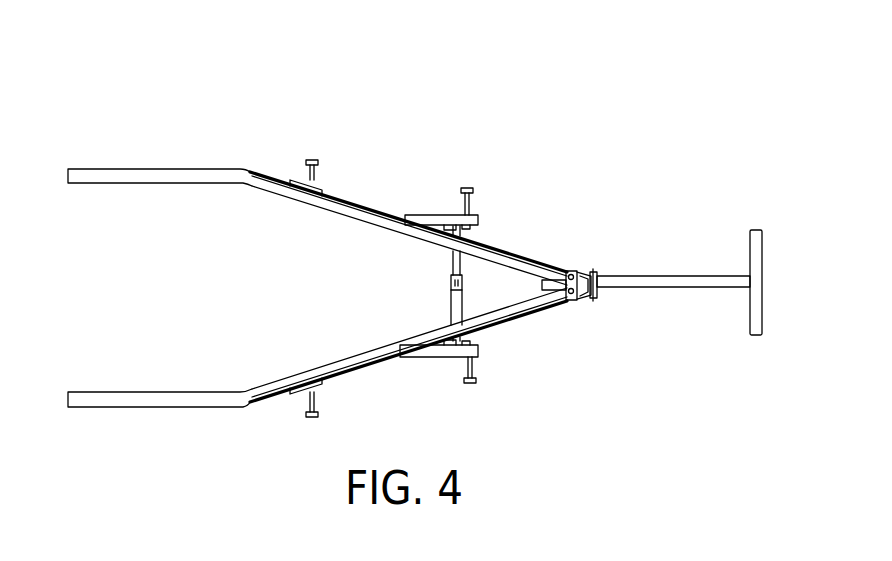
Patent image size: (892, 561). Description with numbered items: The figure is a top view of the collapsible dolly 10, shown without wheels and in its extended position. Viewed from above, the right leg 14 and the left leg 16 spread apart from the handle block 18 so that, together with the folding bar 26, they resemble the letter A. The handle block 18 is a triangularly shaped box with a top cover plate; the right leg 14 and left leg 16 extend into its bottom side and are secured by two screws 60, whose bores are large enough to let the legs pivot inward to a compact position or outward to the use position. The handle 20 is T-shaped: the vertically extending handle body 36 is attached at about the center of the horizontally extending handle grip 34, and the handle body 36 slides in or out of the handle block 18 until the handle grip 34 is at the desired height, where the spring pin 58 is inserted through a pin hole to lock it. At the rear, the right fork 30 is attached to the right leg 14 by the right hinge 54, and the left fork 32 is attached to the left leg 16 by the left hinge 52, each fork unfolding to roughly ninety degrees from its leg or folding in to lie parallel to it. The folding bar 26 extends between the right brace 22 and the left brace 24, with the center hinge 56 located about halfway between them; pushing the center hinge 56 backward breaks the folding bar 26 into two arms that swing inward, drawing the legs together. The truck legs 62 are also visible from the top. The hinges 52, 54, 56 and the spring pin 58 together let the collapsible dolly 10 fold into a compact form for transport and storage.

The collapsible dolly 10 is at (600, 88).
The right leg 14 is at (372, 232).
The left leg 16 is at (392, 338).
The handle block 18 is at (583, 310).
The handle 20 is at (679, 244).
The right brace 22 is at (432, 218).
The left brace 24 is at (445, 352).
The folding bar 26 is at (464, 307).
The right fork 30 is at (108, 169).
The left fork 32 is at (122, 395).
The handle grip 34 is at (756, 303).
The handle body 36 is at (640, 288).
The left hinge 52 is at (250, 404).
The right hinge 54 is at (249, 172).
The center hinge 56 is at (452, 287).
The spring pin 58 is at (596, 272).
The screws 60 is at (570, 275).
The truck legs 62 is at (312, 159).